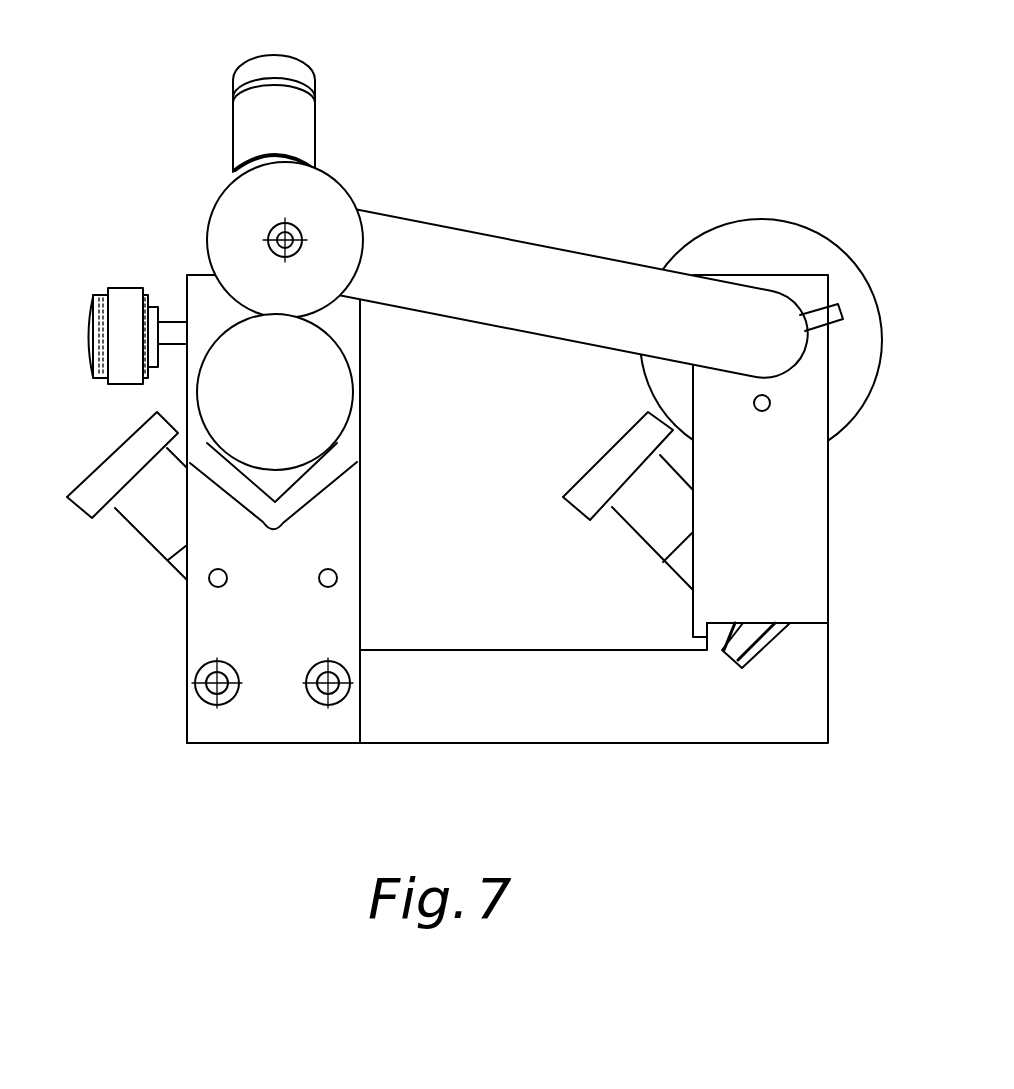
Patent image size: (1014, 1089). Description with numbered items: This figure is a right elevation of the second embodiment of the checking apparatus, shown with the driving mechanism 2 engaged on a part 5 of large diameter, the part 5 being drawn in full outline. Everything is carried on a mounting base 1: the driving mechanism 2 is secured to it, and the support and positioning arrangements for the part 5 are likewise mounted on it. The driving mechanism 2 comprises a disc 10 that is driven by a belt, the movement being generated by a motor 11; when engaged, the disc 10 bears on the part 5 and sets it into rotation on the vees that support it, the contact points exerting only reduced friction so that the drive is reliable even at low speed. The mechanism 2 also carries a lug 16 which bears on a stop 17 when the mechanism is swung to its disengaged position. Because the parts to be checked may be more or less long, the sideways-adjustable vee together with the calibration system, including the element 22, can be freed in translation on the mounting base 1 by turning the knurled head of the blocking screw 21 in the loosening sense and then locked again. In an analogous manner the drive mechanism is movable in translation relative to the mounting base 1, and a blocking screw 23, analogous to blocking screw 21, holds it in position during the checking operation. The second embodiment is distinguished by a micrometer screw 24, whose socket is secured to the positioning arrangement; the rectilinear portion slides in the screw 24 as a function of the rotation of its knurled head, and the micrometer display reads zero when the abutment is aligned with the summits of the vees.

The mounting base 1 is at (570, 710).
The driving mechanism 2 is at (628, 175).
The part 5 is at (307, 404).
The disc 10 is at (288, 218).
The motor 11 is at (866, 378).
The lug 16 is at (843, 303).
The stop 17 is at (762, 412).
The blocking screw 21 is at (170, 523).
The calibration system element 22 is at (124, 306).
The blocking screw 23 is at (678, 527).
The micrometer screw 24 is at (287, 130).